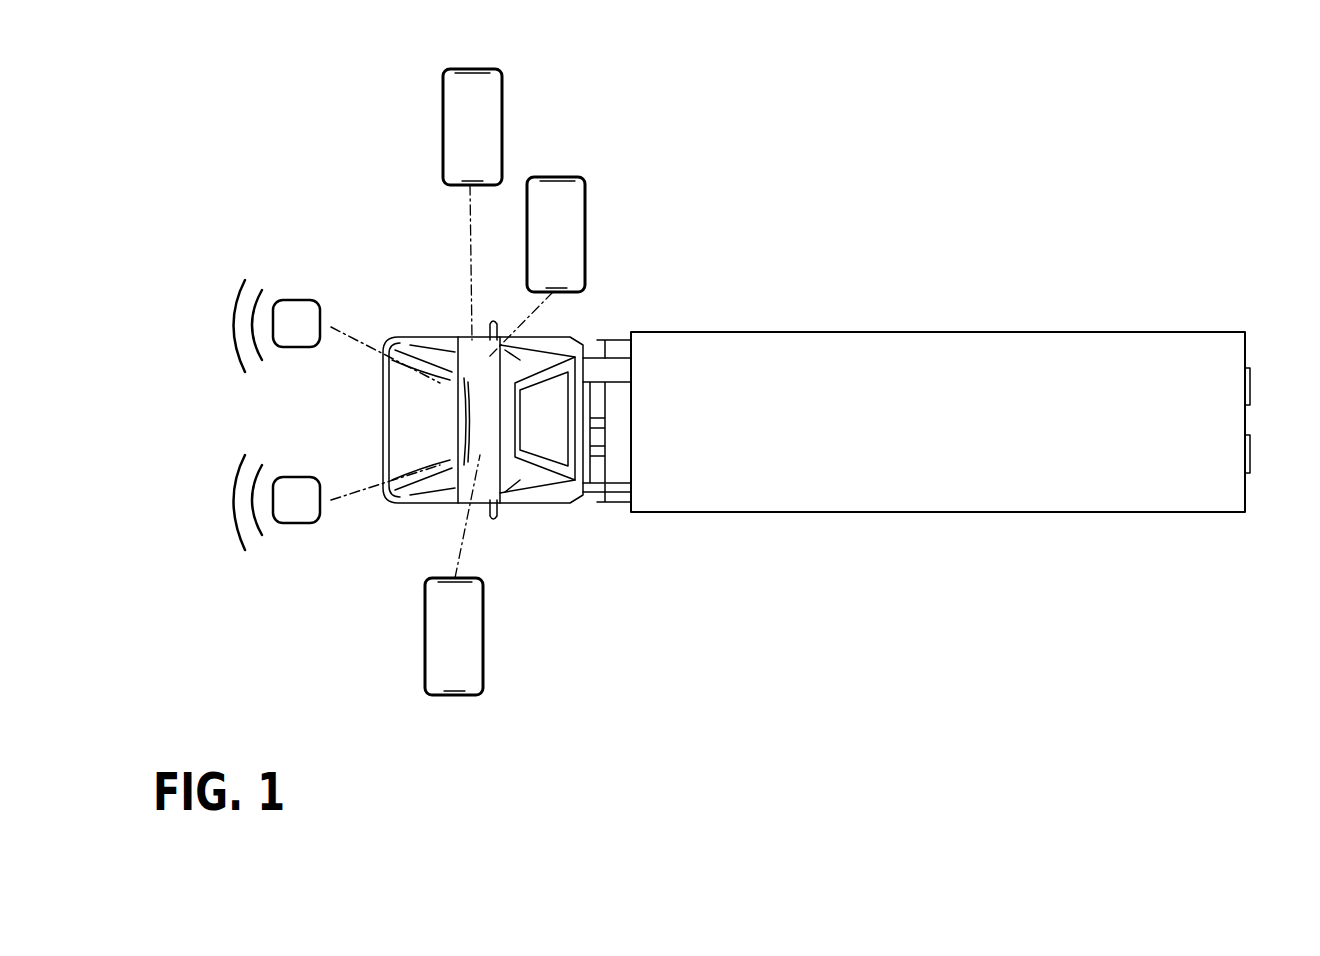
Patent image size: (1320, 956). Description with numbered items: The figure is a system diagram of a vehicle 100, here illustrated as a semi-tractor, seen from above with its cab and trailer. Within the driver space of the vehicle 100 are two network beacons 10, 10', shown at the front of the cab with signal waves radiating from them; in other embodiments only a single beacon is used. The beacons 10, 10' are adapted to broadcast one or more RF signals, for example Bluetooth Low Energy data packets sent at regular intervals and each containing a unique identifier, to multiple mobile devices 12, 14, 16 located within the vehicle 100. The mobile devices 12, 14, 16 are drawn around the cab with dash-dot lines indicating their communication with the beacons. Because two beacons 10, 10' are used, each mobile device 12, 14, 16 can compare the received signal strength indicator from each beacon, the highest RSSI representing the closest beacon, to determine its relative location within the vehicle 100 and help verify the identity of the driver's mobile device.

The vehicle 100 is at (1006, 332).
The mobile device 14 is at (502, 118).
The mobile device 16 is at (585, 224).
The mobile device 12 is at (483, 645).
The network beacon 10 is at (337, 476).
The network beacon 10' is at (337, 301).